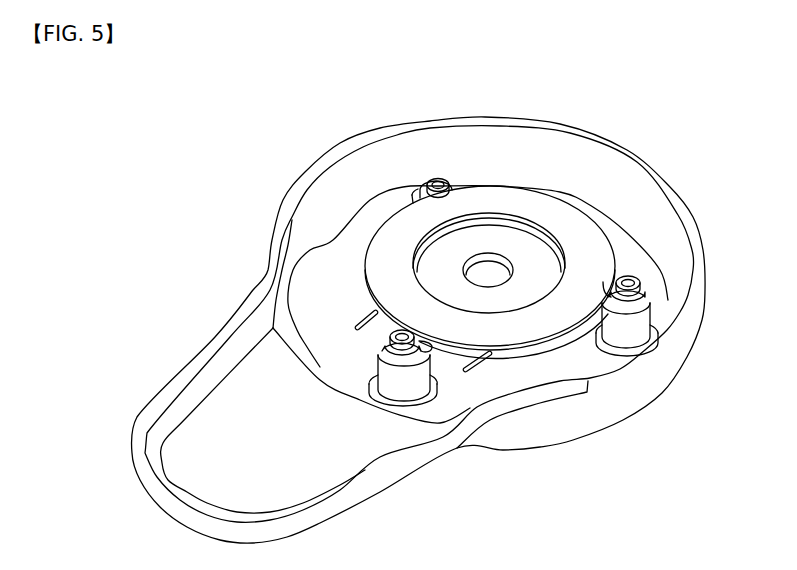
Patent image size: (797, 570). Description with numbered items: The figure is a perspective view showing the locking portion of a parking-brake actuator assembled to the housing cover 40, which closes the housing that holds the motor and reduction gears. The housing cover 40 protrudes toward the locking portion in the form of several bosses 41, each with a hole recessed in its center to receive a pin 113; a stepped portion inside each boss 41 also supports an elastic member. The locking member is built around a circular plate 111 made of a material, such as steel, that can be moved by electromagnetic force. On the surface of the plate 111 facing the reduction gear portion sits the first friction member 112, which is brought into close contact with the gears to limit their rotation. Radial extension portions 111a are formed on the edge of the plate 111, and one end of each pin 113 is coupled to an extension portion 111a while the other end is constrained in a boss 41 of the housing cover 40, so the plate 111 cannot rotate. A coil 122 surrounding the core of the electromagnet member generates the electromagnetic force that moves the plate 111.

The housing cover 40 is at (672, 361).
The boss 41 is at (650, 307).
The plate 111 is at (523, 245).
The extension portion 111a is at (614, 283).
The first friction member 112 is at (493, 192).
The pin 113 is at (434, 178).
The coil 122 is at (362, 324).